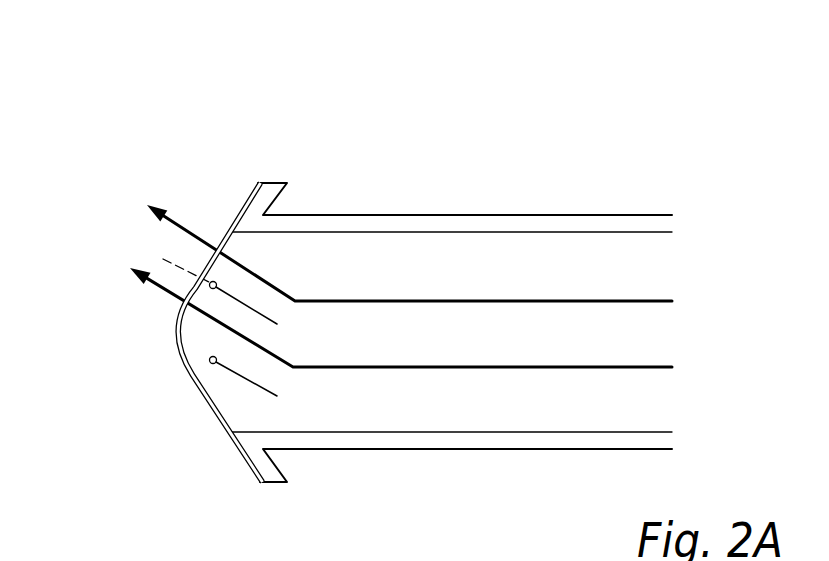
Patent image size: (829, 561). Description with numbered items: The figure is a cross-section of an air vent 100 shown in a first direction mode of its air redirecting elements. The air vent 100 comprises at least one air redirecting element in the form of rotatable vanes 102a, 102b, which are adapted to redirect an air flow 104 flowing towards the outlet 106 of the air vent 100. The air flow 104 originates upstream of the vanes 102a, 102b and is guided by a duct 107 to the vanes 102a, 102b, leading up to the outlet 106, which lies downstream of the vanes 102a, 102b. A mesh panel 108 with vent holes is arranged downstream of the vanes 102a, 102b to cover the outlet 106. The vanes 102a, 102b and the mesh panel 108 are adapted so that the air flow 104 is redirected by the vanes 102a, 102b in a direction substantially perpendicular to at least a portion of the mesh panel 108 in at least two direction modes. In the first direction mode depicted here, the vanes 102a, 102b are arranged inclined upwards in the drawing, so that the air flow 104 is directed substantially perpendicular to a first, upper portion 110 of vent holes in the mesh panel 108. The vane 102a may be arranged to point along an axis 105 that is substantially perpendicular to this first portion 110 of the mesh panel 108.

The air vent 100 is at (270, 93).
The rotatable vane 102a is at (277, 324).
The rotatable vane 102b is at (277, 396).
The air flow 104 is at (490, 301).
The axis 105 is at (150, 256).
The outlet 106 is at (220, 332).
The duct 107 is at (378, 452).
The mesh panel 108 is at (172, 374).
The first portion of vent holes 110 is at (190, 253).